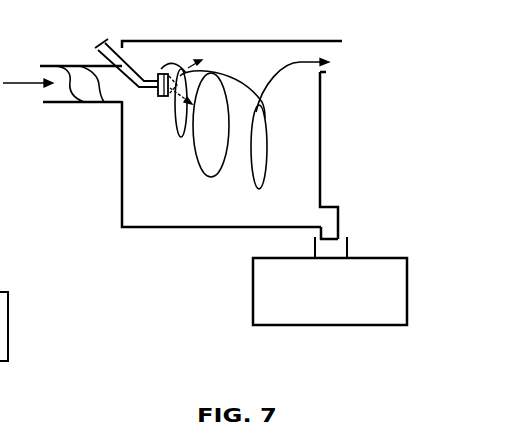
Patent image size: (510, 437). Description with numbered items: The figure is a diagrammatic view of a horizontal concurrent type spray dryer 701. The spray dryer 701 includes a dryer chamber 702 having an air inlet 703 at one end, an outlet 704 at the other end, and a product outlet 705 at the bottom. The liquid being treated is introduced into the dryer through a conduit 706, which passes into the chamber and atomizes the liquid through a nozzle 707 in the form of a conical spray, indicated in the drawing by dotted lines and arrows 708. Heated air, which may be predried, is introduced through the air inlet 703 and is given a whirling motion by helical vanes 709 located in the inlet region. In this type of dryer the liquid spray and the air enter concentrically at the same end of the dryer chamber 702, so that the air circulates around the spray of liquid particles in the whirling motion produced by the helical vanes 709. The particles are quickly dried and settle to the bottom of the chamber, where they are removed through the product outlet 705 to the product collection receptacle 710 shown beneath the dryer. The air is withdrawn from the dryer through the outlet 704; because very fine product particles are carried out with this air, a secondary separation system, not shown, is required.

The spray dryer 701 is at (198, 234).
The dryer chamber 702 is at (322, 157).
The air inlet 703 is at (90, 94).
The outlet 704 is at (328, 73).
The product outlet 705 is at (339, 232).
The conduit 706 is at (112, 44).
The nozzle 707 is at (163, 97).
The dotted lines and arrows 708 is at (190, 69).
The helical vanes 709 is at (80, 50).
The product collection receptacle 710 is at (337, 326).